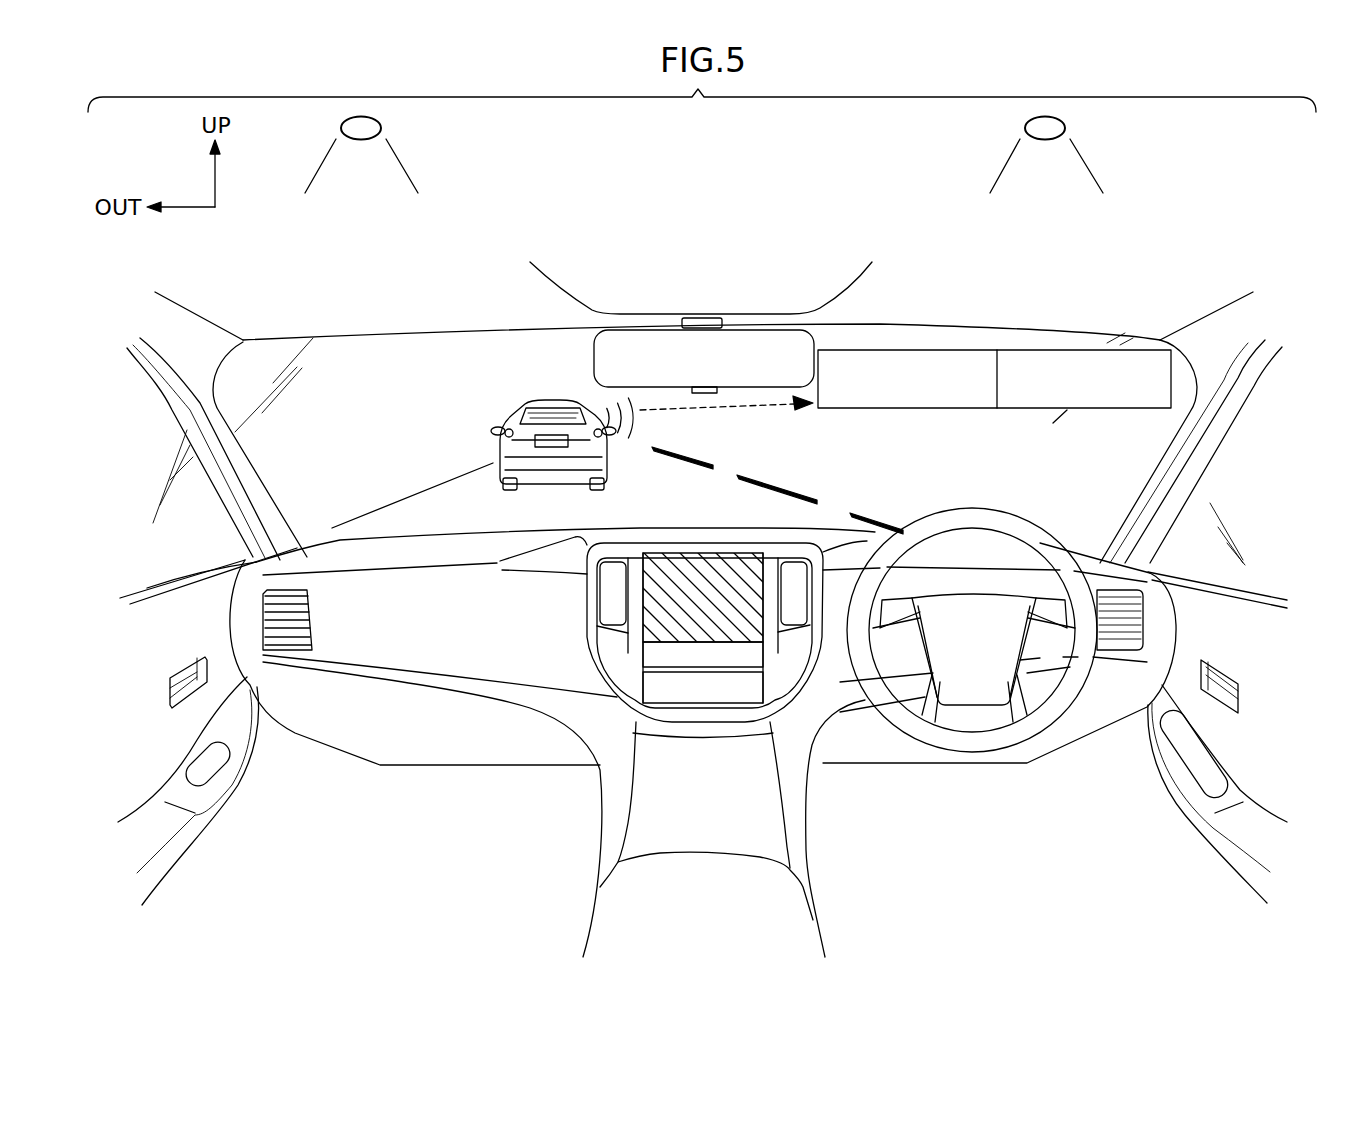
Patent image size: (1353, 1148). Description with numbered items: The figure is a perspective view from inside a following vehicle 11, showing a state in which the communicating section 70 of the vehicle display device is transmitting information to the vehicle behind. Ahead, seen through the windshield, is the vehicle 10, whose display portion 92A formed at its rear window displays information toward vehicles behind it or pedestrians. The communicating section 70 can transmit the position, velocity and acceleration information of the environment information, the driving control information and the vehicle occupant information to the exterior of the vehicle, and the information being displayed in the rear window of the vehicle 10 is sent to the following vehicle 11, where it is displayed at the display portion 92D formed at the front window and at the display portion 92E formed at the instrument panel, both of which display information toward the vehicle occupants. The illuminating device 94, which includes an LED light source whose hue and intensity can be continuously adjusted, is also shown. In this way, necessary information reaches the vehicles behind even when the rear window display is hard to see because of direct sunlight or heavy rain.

The vehicle 10 is at (488, 417).
The following vehicle 11 is at (702, 609).
The communicating section 70 is at (620, 438).
The display portion 92A is at (542, 404).
The display portion 92D is at (921, 350).
The display portion 92E is at (692, 572).
The illuminating device 94 is at (381, 126).